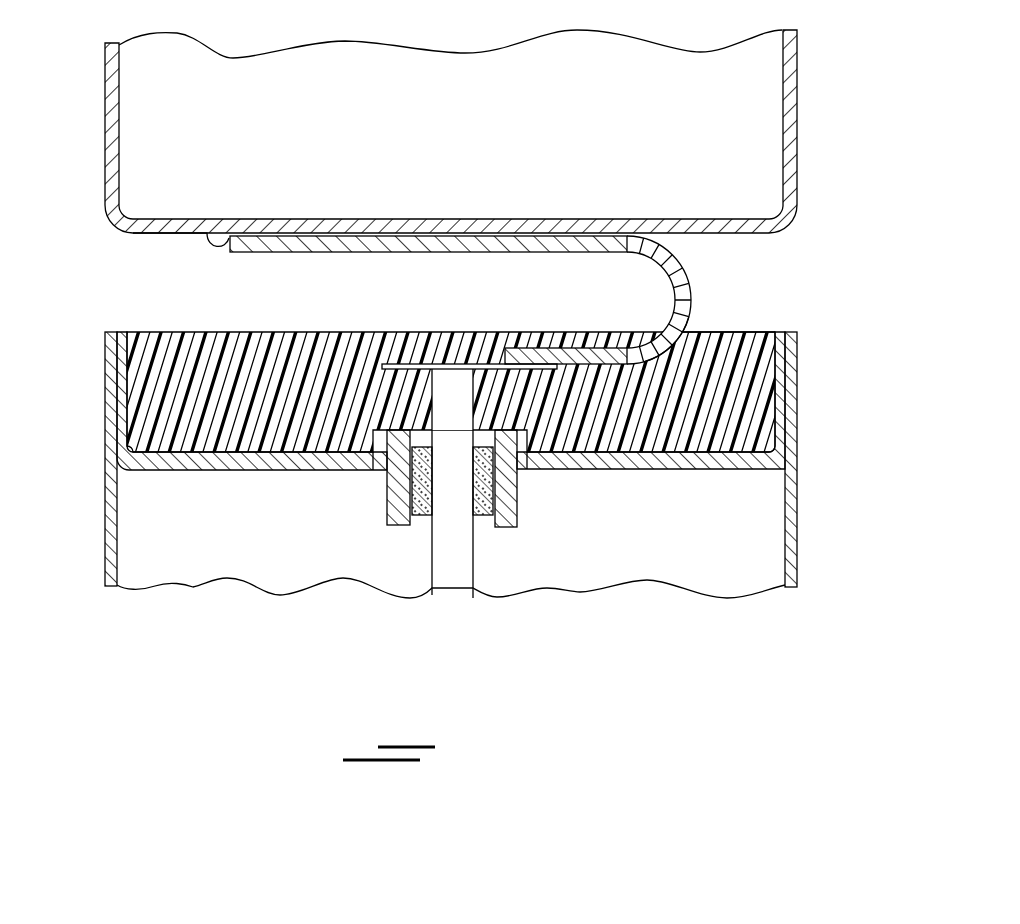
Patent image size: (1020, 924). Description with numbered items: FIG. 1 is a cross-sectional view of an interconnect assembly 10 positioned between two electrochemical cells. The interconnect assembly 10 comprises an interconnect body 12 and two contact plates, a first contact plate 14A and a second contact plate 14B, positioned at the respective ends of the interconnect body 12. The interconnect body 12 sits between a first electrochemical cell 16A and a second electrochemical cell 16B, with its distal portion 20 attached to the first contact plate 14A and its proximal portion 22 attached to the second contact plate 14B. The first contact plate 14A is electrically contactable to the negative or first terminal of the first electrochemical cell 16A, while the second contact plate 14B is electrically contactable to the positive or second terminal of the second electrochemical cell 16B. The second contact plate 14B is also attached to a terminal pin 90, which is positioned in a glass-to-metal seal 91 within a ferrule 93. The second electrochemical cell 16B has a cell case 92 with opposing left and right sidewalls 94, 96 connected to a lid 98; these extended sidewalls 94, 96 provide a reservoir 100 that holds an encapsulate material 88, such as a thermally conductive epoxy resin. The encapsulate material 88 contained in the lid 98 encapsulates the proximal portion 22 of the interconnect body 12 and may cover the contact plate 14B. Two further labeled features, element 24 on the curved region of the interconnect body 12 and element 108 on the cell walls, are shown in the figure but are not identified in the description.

The interconnect assembly 10 is at (774, 308).
The interconnect body 12 is at (677, 273).
The first contact plate 14A is at (223, 238).
The second contact plate 14B is at (410, 364).
The first electrochemical cell 16A is at (767, 120).
The second electrochemical cell 16B is at (773, 540).
The distal portion 20 is at (500, 251).
The proximal portion 22 is at (527, 357).
The bracket outer surface 24 is at (690, 315).
The encapsulate material 88 is at (173, 347).
The terminal pin 90 is at (455, 562).
The glass-to-metal seal 91 is at (420, 505).
The cell case 92 is at (800, 487).
The ferrule 93 is at (507, 502).
The left sidewall 94 is at (110, 397).
The right sidewall 96 is at (793, 415).
The lid 98 is at (205, 457).
The reservoir 100 is at (753, 370).
The housing wall 108 is at (795, 66).